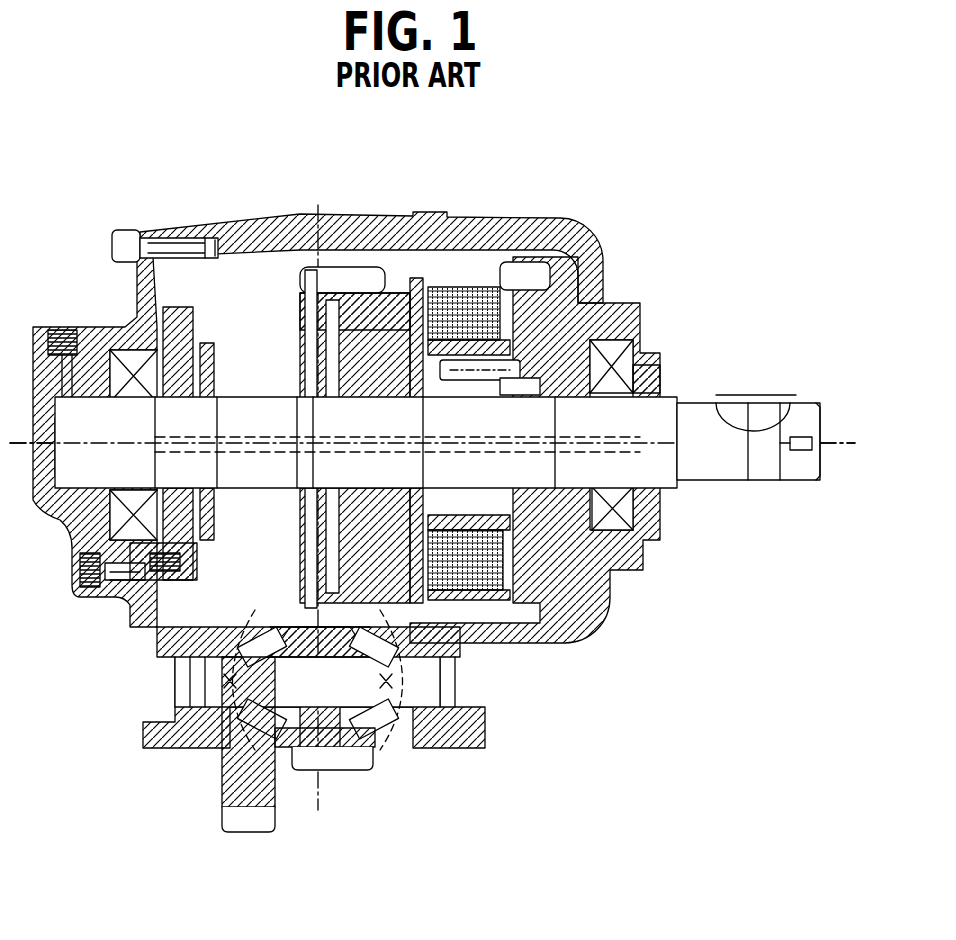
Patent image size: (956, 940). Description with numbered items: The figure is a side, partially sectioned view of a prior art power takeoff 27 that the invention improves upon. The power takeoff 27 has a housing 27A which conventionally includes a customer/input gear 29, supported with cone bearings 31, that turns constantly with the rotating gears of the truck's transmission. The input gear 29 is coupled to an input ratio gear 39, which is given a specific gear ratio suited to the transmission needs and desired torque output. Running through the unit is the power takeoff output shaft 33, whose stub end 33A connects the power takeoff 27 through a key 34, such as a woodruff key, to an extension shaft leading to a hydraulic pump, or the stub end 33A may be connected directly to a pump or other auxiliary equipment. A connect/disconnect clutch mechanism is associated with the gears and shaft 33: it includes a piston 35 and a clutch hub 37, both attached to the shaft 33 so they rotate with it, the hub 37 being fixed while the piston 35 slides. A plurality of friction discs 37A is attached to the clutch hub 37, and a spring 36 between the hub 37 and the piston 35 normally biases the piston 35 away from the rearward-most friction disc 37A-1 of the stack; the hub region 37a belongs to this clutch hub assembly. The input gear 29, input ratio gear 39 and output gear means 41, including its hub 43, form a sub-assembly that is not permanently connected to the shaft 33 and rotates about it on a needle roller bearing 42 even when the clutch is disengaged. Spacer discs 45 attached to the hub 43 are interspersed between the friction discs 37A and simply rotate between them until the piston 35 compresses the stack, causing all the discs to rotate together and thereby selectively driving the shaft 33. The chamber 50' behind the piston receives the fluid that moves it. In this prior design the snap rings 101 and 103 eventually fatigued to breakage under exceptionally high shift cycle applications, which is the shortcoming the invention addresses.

The power takeoff 27 is at (735, 270).
The housing 27A is at (380, 250).
The customer/input gear 29 is at (230, 788).
The cone bearings 31 is at (218, 747).
The power takeoff output shaft 33 is at (658, 407).
The stub end 33A is at (722, 458).
The key 34 is at (773, 395).
The piston 35 is at (598, 287).
The spring 36 is at (505, 385).
The clutch hub 37 is at (303, 323).
The rotor hub 37a is at (303, 363).
The friction discs 37A is at (482, 287).
The rearward most friction disc 37A-1 is at (562, 250).
The input ratio gear 39 is at (340, 755).
The output gear means 41 is at (303, 270).
The needle roller bearing 42 is at (336, 405).
The hub 43 is at (303, 306).
The spacer discs 45 is at (508, 598).
The bearing housing 50' is at (547, 447).
The snap ring 101 is at (655, 375).
The snap ring 103 is at (450, 383).